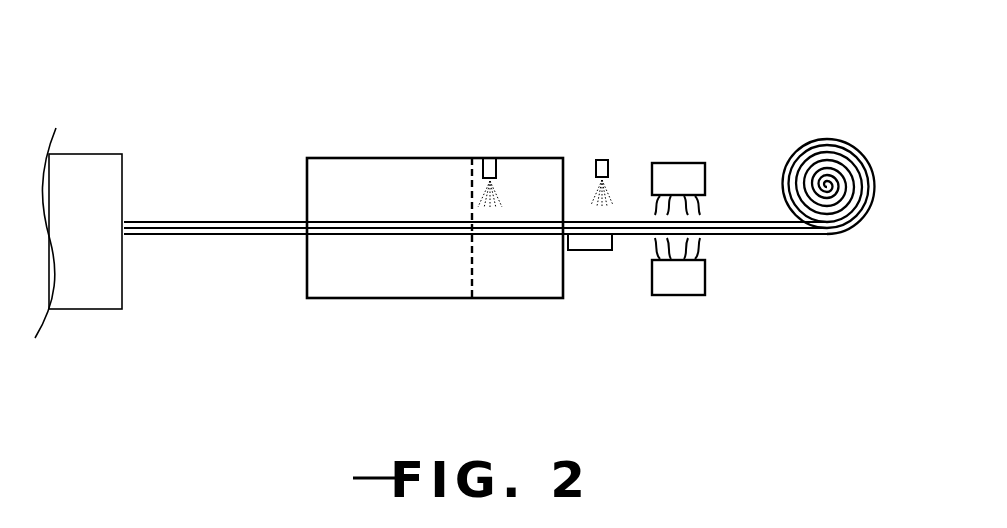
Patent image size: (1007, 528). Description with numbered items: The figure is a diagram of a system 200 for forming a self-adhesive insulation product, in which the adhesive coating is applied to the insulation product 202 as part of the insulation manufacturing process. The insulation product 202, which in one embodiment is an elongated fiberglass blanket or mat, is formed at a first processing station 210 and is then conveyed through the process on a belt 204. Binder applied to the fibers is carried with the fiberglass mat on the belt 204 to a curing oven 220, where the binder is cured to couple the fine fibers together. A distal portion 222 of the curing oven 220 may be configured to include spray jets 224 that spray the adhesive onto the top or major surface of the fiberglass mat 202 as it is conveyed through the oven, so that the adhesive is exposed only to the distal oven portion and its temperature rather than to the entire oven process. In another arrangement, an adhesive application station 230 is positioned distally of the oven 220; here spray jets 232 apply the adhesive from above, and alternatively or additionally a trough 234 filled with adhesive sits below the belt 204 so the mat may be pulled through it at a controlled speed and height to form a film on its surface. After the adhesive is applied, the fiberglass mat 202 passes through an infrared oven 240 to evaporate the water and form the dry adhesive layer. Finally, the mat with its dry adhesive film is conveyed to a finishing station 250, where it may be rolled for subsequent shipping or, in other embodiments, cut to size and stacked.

The system 200 is at (804, 90).
The insulation product 202 is at (228, 220).
The belt 204 is at (242, 238).
The first processing station 210 is at (88, 172).
The curing oven 220 is at (365, 268).
The distal portion 222 is at (503, 147).
The spray jets 224 is at (482, 159).
The adhesive application station 230 is at (630, 100).
The spray jets 232 is at (610, 172).
The trough 234 is at (595, 252).
The infrared oven 240 is at (708, 181).
The finishing station 250 is at (837, 133).